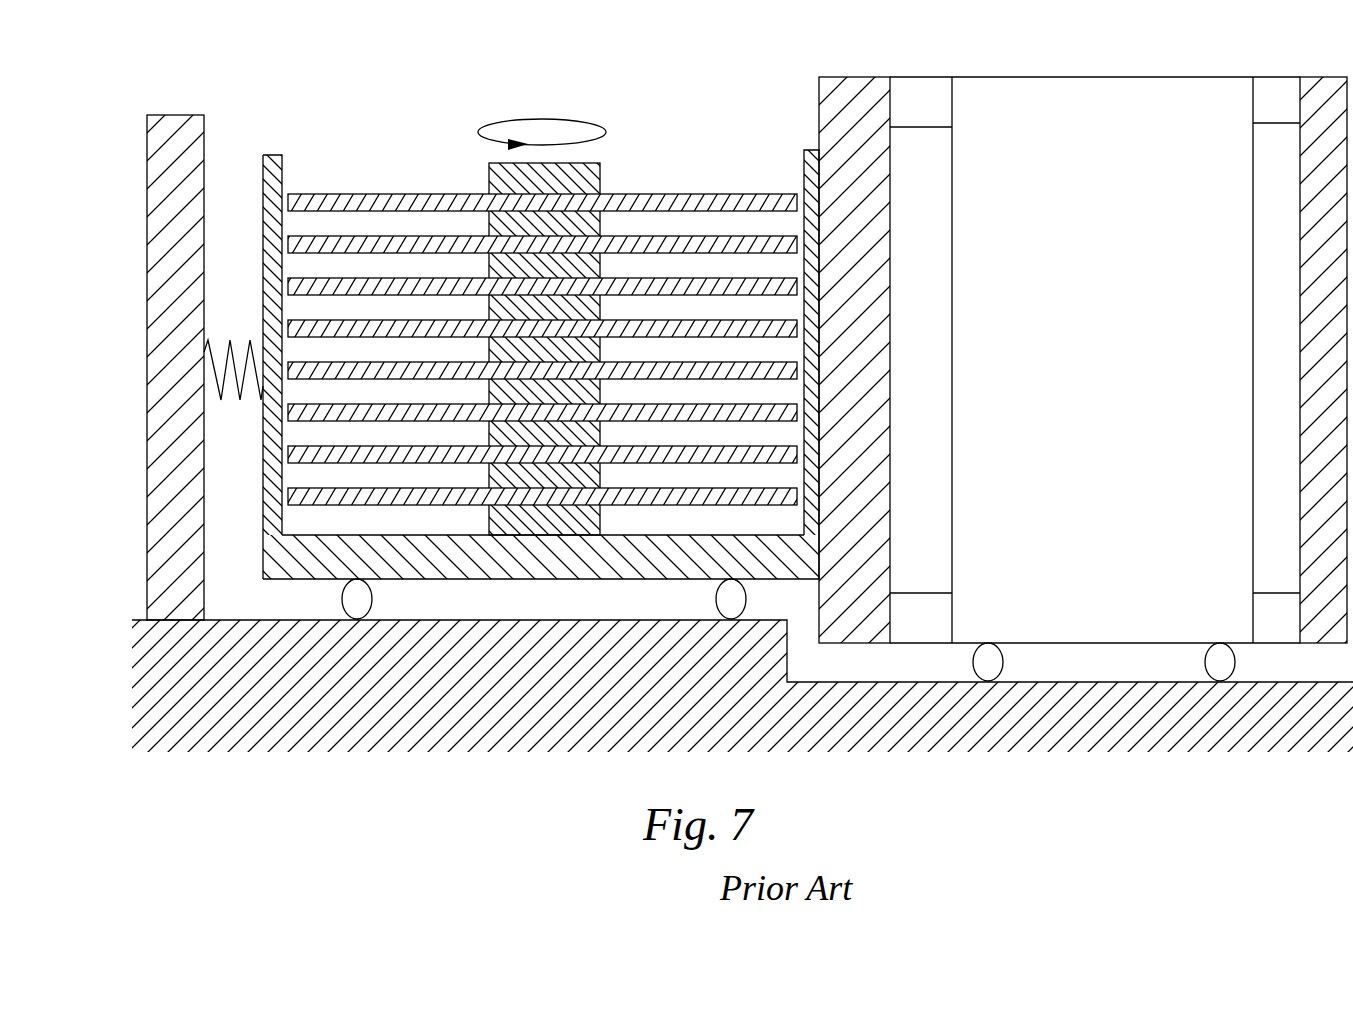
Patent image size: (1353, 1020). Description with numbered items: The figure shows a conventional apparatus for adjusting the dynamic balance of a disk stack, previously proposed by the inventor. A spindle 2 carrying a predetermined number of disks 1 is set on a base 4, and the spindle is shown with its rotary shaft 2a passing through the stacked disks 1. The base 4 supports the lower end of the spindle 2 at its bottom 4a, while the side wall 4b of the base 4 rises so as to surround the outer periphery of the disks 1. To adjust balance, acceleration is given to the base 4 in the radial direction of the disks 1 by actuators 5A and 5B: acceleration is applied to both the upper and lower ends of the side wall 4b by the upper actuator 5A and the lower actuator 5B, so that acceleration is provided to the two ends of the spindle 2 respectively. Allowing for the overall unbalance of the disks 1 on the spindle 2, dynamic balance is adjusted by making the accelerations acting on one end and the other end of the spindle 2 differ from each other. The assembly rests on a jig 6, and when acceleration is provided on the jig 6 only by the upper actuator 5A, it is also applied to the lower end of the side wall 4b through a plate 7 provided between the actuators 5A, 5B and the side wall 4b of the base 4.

The disks 1 is at (355, 285).
The spindle 2 is at (500, 163).
The rotary shaft 2a is at (603, 177).
The base 4 is at (268, 182).
The bottom 4a is at (514, 548).
The side wall 4b is at (803, 164).
The upper actuator 5A is at (942, 103).
The lower actuator 5B is at (950, 612).
The jig 6 is at (153, 680).
The plate 7 is at (853, 80).